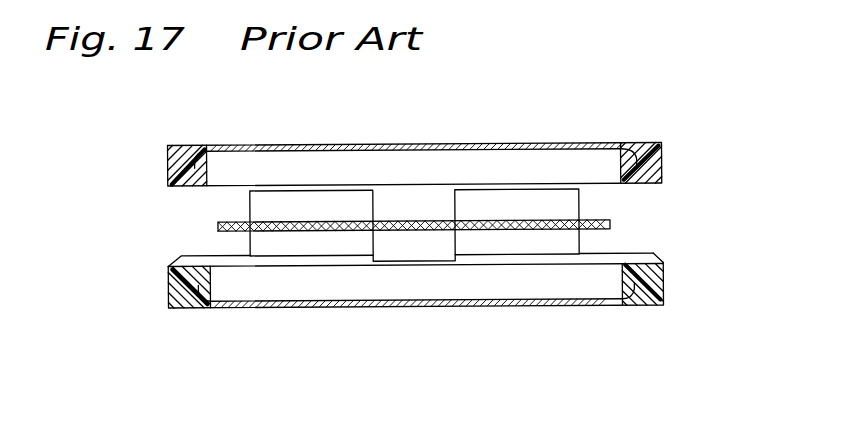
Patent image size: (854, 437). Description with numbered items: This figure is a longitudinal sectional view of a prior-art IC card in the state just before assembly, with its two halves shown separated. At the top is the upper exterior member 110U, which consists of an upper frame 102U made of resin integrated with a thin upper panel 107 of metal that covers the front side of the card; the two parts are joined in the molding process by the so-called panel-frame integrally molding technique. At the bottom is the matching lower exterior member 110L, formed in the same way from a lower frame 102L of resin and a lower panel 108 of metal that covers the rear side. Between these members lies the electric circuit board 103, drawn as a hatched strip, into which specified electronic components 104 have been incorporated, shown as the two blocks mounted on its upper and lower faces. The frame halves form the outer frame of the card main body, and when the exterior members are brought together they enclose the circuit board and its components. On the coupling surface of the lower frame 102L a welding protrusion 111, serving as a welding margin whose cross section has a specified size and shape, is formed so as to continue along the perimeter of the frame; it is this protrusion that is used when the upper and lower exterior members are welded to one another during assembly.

The upper exterior member 110U is at (461, 139).
The upper frame 102U is at (662, 166).
The upper panel 107 is at (418, 136).
The electric circuit board 103 is at (407, 221).
The electronic components 104 is at (477, 262).
The lower exterior member 110L is at (457, 319).
The lower frame 102L is at (664, 290).
The lower panel 108 is at (592, 304).
The welding protrusion 111 is at (657, 257).